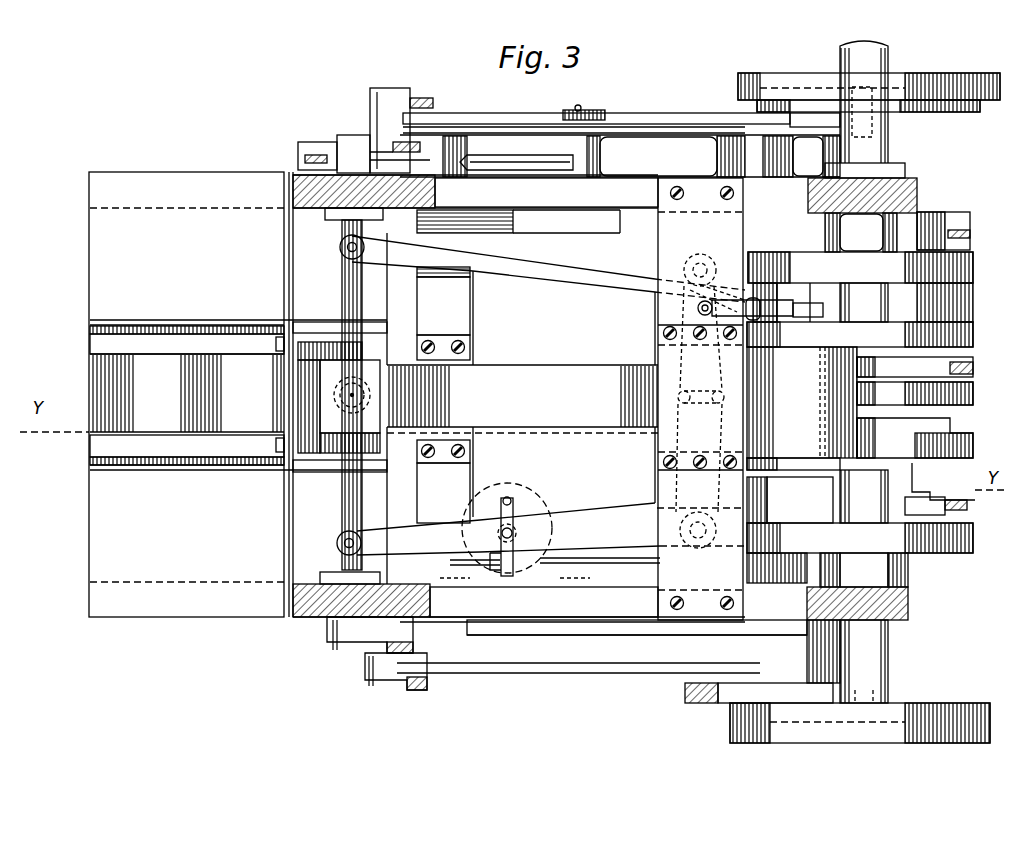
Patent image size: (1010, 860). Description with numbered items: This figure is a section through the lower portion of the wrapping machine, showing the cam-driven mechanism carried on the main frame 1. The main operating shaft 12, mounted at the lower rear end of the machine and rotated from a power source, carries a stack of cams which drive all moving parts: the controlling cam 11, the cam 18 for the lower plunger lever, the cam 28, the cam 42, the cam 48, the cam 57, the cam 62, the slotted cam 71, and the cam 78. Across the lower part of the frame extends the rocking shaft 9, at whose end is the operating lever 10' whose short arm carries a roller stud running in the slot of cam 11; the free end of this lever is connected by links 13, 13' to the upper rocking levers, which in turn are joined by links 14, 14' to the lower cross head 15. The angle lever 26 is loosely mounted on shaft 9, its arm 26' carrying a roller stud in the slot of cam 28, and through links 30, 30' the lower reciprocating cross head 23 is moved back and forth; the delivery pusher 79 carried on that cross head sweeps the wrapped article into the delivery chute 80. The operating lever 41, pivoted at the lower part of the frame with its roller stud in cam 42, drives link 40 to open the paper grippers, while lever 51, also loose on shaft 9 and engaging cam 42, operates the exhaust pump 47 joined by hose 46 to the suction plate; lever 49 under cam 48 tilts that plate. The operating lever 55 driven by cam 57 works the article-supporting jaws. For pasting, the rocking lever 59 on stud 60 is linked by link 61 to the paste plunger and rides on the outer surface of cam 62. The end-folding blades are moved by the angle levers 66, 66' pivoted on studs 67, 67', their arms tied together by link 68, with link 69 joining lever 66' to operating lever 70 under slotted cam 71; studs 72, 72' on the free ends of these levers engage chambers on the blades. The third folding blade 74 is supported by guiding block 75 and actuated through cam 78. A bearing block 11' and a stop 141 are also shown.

The main frame 1 is at (614, 623).
The rocking shaft 9 is at (745, 506).
The operating lever 10' is at (596, 105).
The controlling cam 11 is at (869, 75).
The bearing block 11' is at (350, 396).
The operating shaft 12 is at (870, 52).
The link 13 is at (415, 681).
The link 13' is at (409, 124).
The link 14 is at (370, 635).
The link 14' is at (383, 154).
The lower cross head 15 is at (343, 503).
The cam 18 is at (898, 425).
The lower reciprocating cross head 23 is at (450, 316).
The angle lever 26 is at (687, 704).
The arm of angle lever 26' is at (763, 716).
The cam 28 is at (855, 742).
The link 30 is at (637, 639).
The link 30' is at (516, 127).
The link 40 is at (517, 675).
The operating lever 41 is at (945, 507).
The stop pin 141 is at (967, 512).
The cam 42 is at (860, 538).
The hose 46 is at (512, 498).
The exhaust pump 47 is at (528, 512).
The cam 48 is at (860, 267).
The lever 49 is at (970, 236).
The lever 51 is at (604, 583).
The operating lever 55 is at (948, 369).
The cam 57 is at (915, 393).
The rocking lever 59 is at (675, 118).
The stud 60 is at (583, 110).
The link 61 is at (300, 158).
The cam 62 is at (912, 113).
The angle lever 66 is at (551, 519).
The angle lever 66' is at (548, 271).
The stud 67 is at (698, 546).
The stud 67' is at (707, 254).
The link 68 is at (700, 390).
The link 69 is at (763, 312).
The operating lever 70 is at (811, 318).
The slotted cam 71 is at (860, 334).
The stud 72 is at (364, 528).
The stud 72' is at (332, 246).
The third folding blade 74 is at (598, 370).
The guiding block 75 is at (655, 443).
The cam 78 is at (924, 490).
The delivery pusher 79 is at (275, 345).
The delivery chute 80 is at (222, 322).